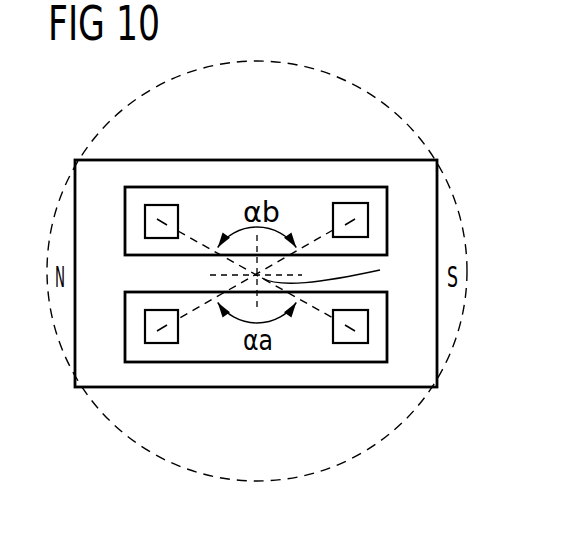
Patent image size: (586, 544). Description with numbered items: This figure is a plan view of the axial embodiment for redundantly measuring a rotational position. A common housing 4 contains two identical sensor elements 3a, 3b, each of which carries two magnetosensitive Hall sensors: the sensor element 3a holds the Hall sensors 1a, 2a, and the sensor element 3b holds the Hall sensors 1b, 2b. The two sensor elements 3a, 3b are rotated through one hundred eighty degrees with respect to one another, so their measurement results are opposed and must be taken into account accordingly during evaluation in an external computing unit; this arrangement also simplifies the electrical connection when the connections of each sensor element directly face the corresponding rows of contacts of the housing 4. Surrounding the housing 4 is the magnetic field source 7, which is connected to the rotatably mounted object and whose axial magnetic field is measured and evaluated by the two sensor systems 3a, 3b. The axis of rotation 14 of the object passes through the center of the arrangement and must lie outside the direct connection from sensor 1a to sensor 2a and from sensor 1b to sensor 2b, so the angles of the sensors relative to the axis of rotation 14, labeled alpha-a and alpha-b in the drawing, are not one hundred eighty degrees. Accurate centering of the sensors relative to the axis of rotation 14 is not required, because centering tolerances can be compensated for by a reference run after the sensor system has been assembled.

The Hall sensor 1a is at (162, 344).
The Hall sensor 1b is at (350, 203).
The Hall sensor 2a is at (350, 344).
The Hall sensor 2b is at (161, 204).
The sensor element 3a is at (296, 343).
The sensor element 3b is at (218, 200).
The housing 4 is at (440, 209).
The magnetic field source 7 is at (465, 302).
The axis of rotation 14 is at (333, 273).